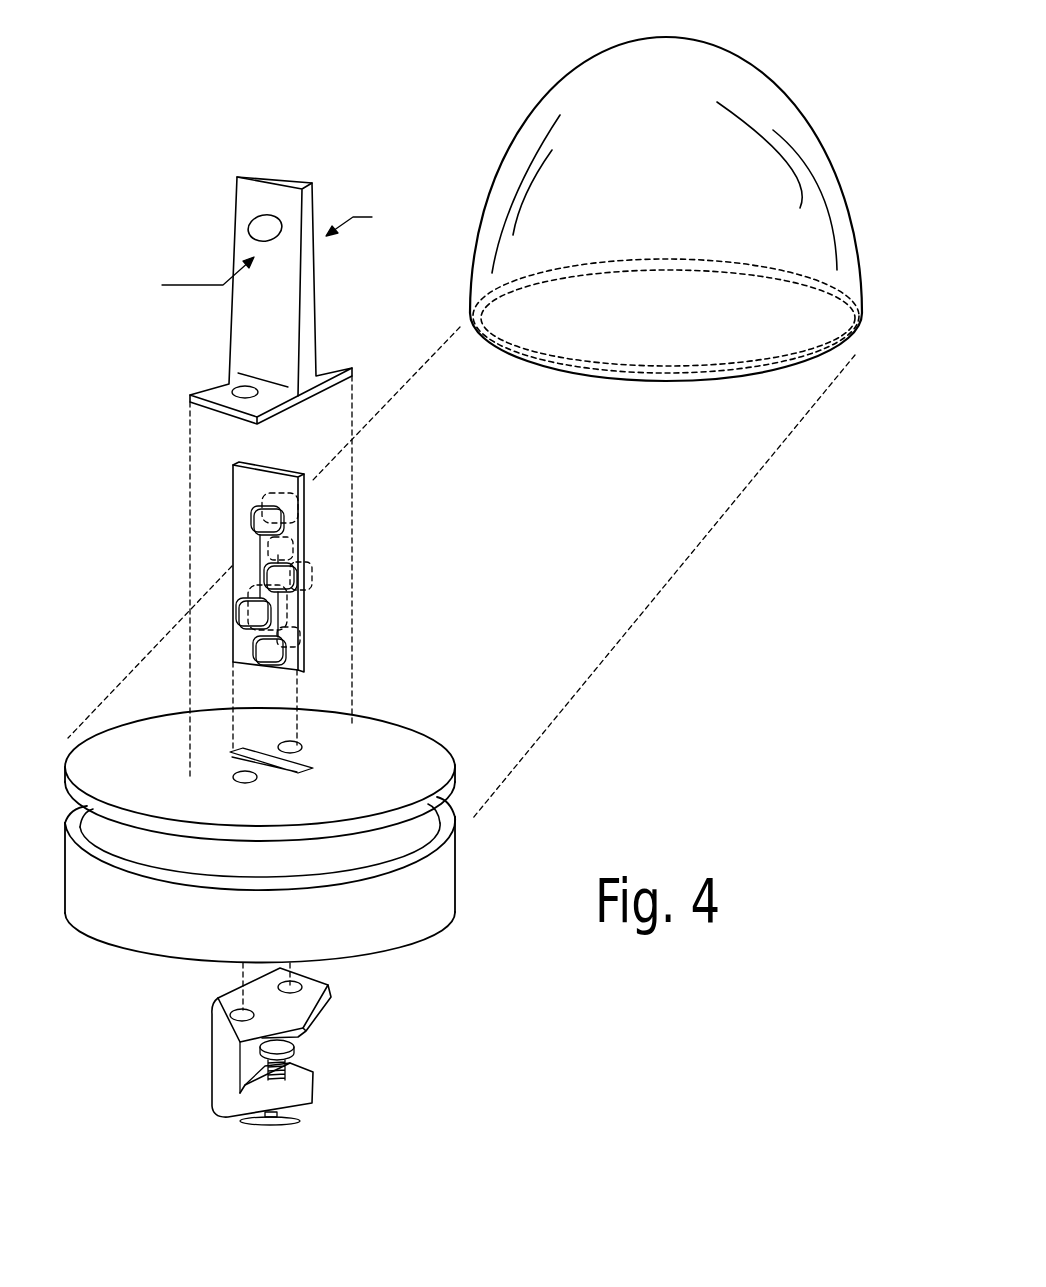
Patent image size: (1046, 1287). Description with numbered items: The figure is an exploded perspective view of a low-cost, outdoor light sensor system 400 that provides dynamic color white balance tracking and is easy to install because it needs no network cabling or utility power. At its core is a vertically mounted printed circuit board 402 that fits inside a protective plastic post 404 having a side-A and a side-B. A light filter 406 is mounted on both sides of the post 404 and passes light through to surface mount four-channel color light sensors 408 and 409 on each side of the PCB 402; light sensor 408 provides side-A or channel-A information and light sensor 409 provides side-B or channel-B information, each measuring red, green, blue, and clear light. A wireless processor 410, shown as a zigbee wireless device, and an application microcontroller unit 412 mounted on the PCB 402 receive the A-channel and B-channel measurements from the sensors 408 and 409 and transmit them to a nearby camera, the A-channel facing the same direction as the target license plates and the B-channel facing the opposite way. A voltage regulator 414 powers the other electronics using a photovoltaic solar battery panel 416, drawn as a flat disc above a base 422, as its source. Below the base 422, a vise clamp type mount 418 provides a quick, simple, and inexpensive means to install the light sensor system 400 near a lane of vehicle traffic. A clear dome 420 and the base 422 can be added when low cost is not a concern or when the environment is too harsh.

The light sensor system 400 is at (306, 86).
The printed circuit board 402 is at (232, 495).
The protective plastic post 404 is at (245, 314).
The light filter 406 is at (256, 218).
The four-channel color light sensor 408 is at (250, 518).
The four-channel color light sensor 409 is at (327, 500).
The wireless processor 410 is at (295, 572).
The application microcontroller unit 412 is at (235, 608).
The voltage regulator 414 is at (287, 655).
The photovoltaic solar battery panel 416 is at (421, 738).
The vise clamp type mount 418 is at (217, 1068).
The clear dome 420 is at (503, 164).
The base 422 is at (452, 878).